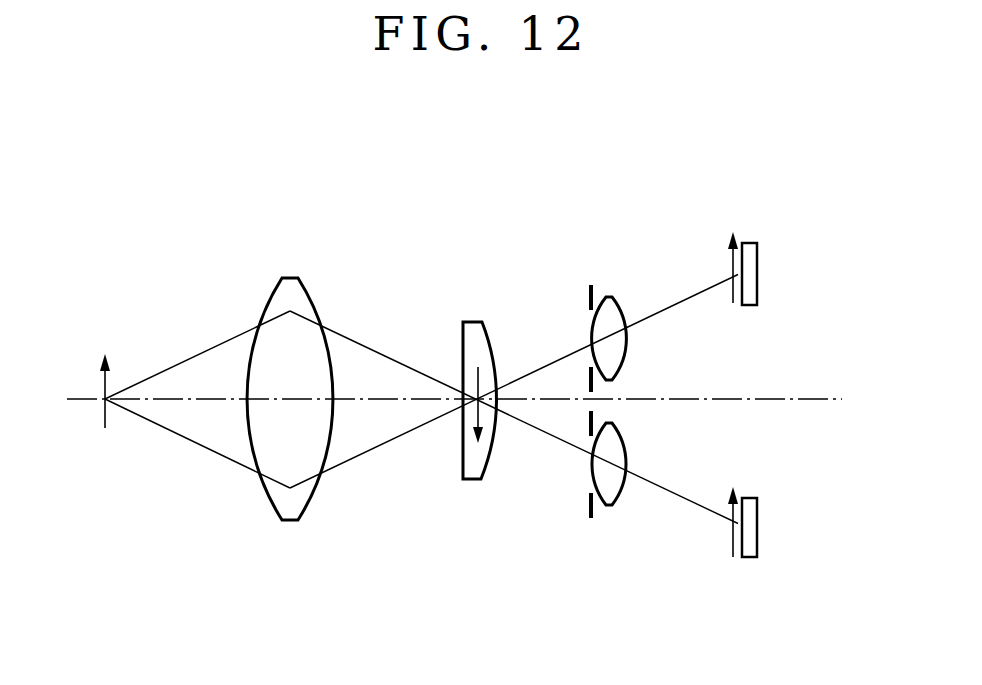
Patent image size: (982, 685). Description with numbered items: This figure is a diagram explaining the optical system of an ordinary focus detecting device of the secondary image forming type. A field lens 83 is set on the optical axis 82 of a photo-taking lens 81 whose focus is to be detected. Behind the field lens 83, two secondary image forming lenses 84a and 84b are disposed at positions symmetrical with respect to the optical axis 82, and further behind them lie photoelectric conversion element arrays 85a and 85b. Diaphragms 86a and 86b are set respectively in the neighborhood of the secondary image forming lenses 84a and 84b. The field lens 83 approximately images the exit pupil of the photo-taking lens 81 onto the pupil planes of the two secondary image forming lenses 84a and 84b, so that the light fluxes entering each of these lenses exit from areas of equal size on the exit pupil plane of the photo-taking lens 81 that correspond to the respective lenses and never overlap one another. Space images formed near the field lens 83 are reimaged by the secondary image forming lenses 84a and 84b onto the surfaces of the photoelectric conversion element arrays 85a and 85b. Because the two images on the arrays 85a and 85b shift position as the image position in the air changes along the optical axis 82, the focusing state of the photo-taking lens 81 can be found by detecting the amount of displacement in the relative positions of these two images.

The photo-taking lens 81 is at (311, 298).
The optical axis 82 is at (418, 482).
The field lens 83 is at (488, 345).
The secondary image forming lens 84a is at (618, 312).
The secondary image forming lens 84b is at (642, 538).
The photoelectric conversion element array 85a is at (793, 230).
The photoelectric conversion element array 85b is at (793, 572).
The diaphragm 86a is at (588, 302).
The diaphragm 86b is at (643, 423).